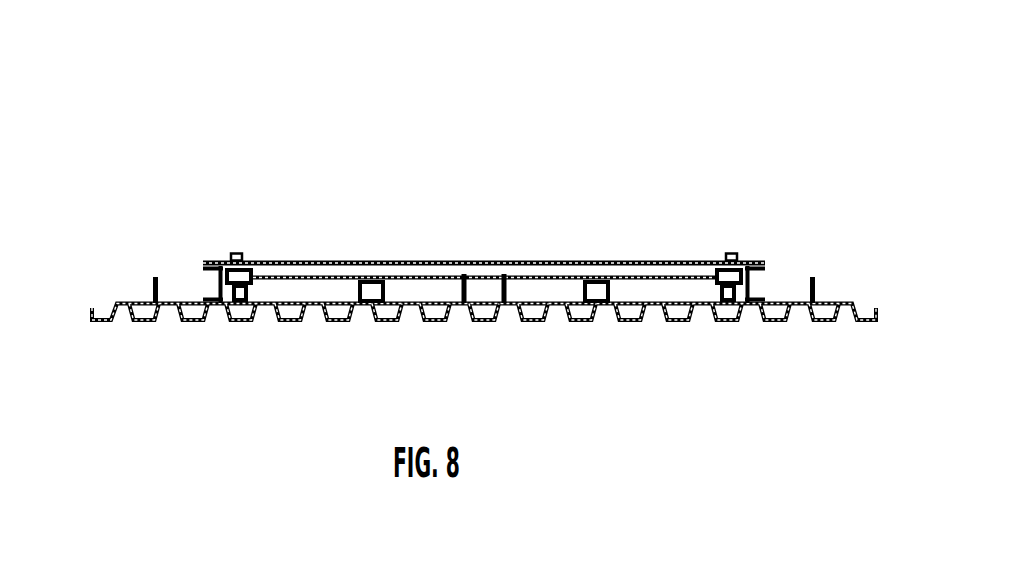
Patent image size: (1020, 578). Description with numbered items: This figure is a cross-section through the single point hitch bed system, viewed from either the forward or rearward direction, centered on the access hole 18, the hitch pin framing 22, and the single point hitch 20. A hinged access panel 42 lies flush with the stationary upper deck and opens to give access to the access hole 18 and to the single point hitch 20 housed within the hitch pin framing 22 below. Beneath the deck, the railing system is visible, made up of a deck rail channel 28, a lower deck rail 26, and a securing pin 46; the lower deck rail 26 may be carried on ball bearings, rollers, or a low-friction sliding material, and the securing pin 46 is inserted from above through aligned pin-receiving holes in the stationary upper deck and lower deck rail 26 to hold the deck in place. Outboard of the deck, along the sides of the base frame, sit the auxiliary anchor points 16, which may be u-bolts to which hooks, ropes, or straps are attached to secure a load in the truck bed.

The auxiliary anchor points 16 is at (143, 273).
The access hole 18 is at (543, 285).
The single point hitch 20 is at (472, 268).
The hitch pin framing 22 is at (498, 271).
The lower deck rail 26 is at (238, 275).
The deck rail channel 28 is at (737, 268).
The hinged access panel 42 is at (543, 249).
The securing pin 46 is at (222, 247).